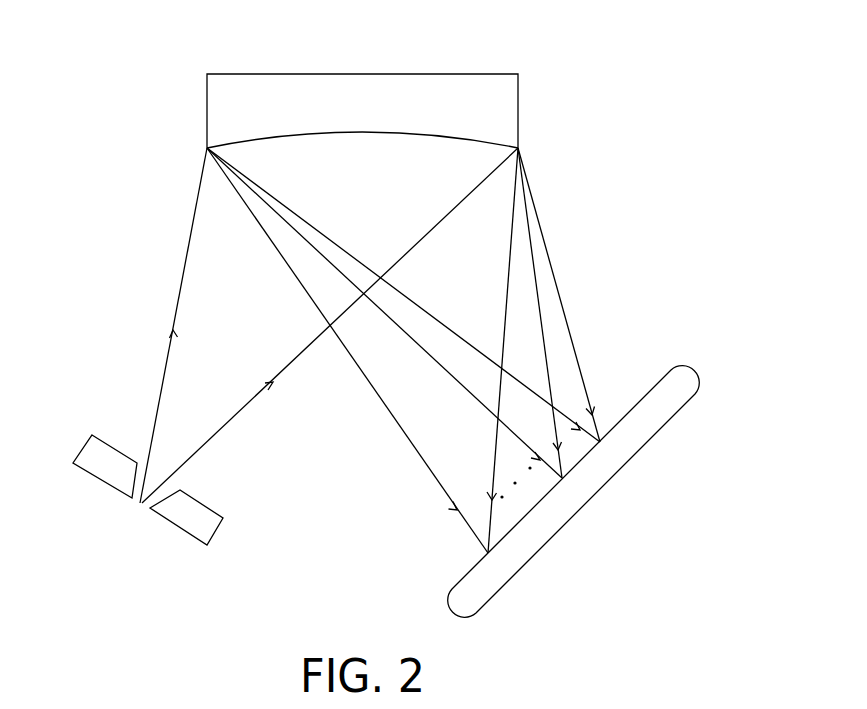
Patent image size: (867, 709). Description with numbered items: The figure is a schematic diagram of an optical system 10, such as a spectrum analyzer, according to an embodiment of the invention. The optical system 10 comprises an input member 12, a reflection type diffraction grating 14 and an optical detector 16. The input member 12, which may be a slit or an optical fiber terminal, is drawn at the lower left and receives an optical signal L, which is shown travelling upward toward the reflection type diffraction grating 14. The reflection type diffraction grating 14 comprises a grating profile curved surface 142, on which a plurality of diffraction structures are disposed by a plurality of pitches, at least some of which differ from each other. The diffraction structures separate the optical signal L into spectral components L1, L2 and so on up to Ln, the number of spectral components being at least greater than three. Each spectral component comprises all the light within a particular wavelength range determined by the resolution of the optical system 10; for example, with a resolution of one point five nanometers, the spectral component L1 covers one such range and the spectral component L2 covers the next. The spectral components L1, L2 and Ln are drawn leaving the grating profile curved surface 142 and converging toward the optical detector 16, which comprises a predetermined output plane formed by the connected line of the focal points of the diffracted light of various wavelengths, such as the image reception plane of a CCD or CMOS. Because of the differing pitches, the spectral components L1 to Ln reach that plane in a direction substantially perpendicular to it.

The optical system 10 is at (728, 57).
The input member 12 is at (215, 527).
The reflection type diffraction grating 14 is at (391, 141).
The grating profile curved surface 142 is at (362, 135).
The optical detector 16 is at (683, 382).
The optical signal L is at (185, 252).
The spectral component Ln is at (512, 252).
The spectral component L1 is at (560, 295).
The spectral component L2 is at (545, 332).